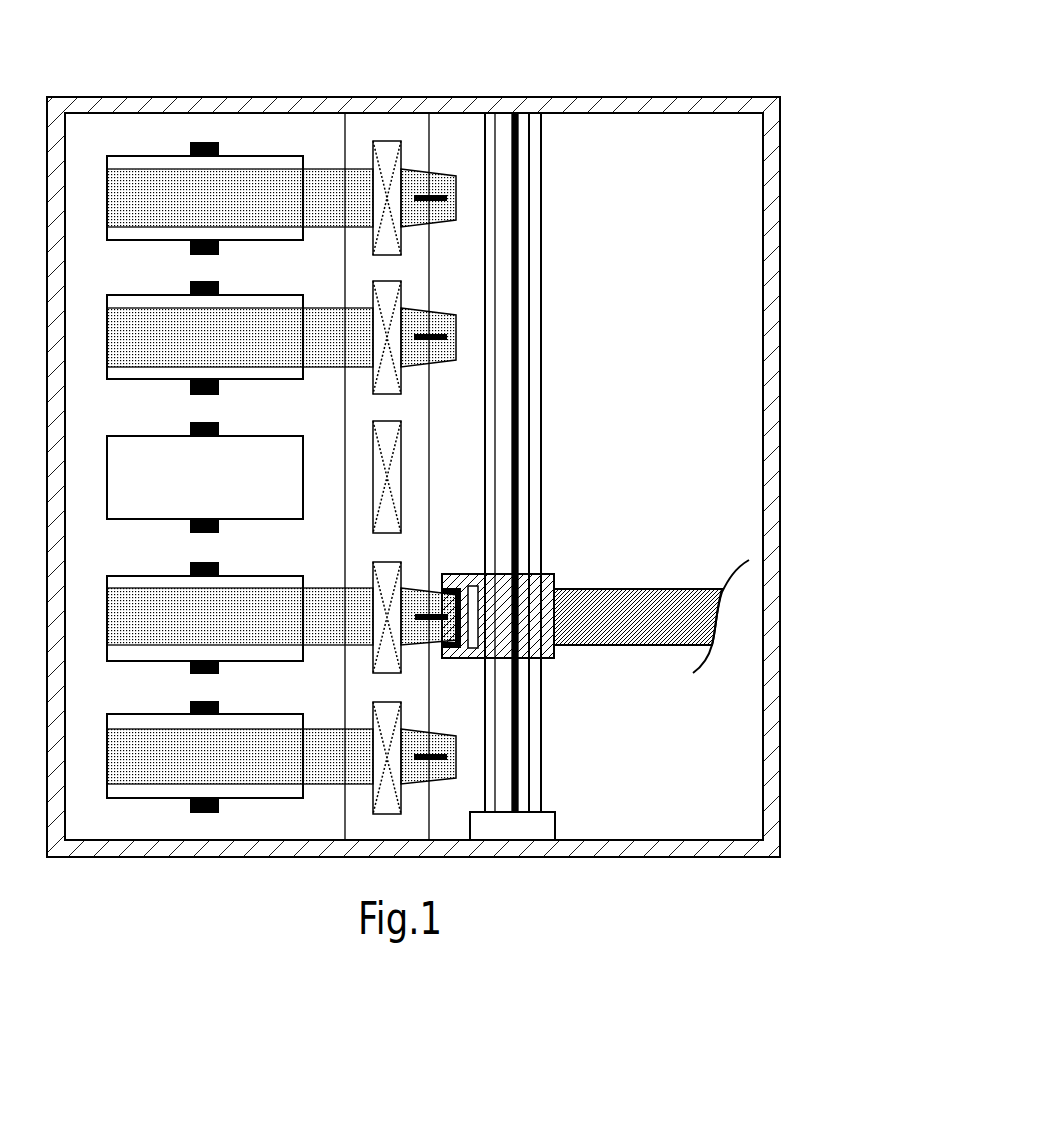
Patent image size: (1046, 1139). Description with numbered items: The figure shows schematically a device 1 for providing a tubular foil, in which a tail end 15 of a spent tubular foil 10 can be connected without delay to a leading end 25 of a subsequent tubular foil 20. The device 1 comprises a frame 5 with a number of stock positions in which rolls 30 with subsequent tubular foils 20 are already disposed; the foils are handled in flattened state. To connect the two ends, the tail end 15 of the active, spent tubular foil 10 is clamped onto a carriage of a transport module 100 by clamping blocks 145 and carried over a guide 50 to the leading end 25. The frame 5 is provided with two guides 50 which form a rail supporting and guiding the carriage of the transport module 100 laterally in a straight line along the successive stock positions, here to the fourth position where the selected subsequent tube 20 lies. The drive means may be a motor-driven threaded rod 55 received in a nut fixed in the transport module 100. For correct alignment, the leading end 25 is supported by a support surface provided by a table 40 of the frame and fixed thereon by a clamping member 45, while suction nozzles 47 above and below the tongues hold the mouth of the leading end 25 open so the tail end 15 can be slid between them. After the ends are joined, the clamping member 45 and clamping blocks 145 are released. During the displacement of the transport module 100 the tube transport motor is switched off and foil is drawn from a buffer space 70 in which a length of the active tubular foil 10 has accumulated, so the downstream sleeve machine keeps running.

The device 1 is at (168, 899).
The frame 5 is at (623, 103).
The spent tubular foil 10 is at (614, 633).
The tail end 15 is at (452, 652).
The subsequent tubular foil 20 is at (140, 175).
The leading end 25 is at (453, 213).
The roll 30 is at (158, 237).
The table 40 is at (418, 492).
The clamping member 45 is at (384, 152).
The suction nozzles 47 is at (445, 195).
The guide 50 is at (490, 292).
The threaded rod 55 is at (516, 408).
The buffer space 70 is at (710, 765).
The transport module 100 is at (553, 575).
The clamping blocks 145 is at (472, 582).